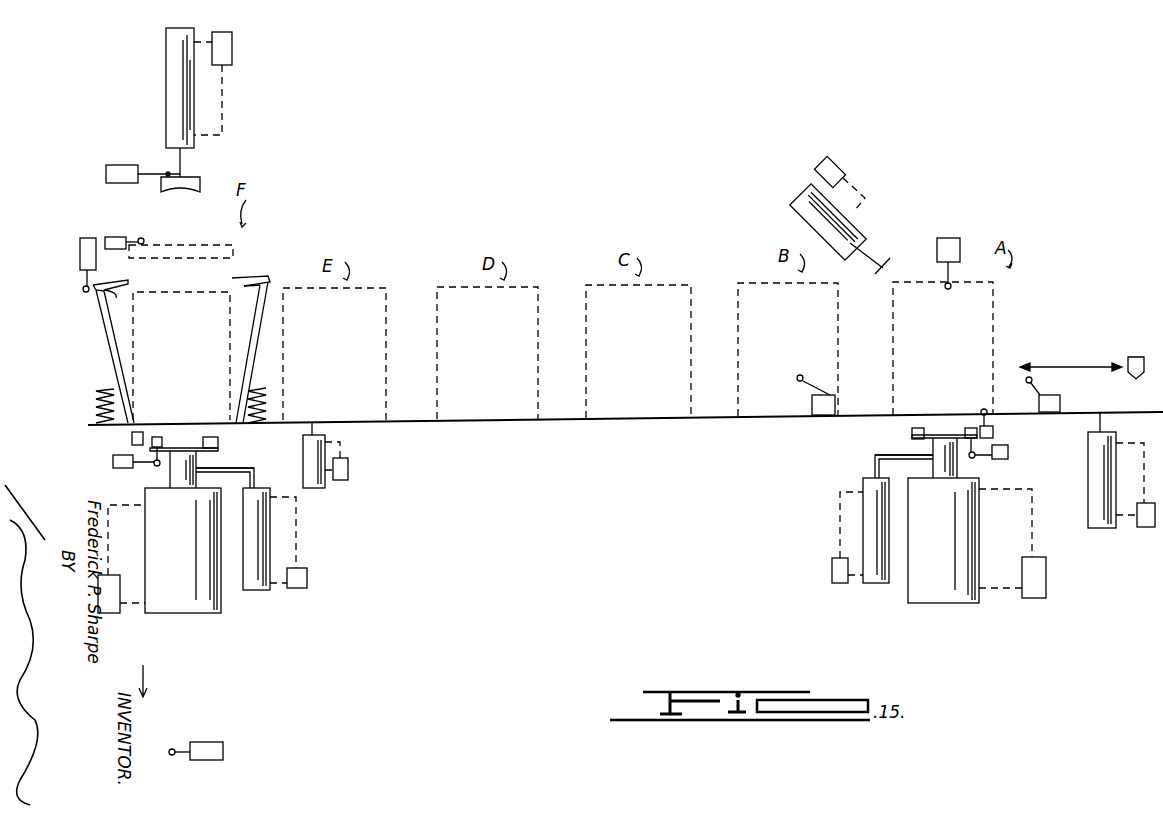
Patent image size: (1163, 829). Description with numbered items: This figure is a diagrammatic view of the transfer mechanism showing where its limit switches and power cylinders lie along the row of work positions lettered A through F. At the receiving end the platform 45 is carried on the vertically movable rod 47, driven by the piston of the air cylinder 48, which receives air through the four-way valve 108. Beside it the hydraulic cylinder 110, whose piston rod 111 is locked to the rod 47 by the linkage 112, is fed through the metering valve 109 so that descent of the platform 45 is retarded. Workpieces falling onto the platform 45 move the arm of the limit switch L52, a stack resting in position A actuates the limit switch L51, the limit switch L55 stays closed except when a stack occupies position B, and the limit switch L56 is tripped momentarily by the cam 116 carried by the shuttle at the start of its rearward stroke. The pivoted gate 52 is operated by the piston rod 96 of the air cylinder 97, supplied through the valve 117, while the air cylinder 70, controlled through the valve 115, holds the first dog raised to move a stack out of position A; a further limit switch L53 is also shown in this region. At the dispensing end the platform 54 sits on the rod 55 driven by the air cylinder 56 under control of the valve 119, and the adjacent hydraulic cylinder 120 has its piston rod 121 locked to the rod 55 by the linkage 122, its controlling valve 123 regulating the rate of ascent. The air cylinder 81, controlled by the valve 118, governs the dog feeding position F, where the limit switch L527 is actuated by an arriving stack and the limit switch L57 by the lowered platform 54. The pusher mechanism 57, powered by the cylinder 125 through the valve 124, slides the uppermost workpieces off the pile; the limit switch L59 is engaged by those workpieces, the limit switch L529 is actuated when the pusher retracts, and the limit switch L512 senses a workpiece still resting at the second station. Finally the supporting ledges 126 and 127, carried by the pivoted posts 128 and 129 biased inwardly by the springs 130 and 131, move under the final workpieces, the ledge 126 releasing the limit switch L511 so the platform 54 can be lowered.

The valve 124 is at (232, 48).
The cylinder 125 is at (166, 96).
The pusher mechanism 57 is at (195, 178).
The limit switch L529 is at (106, 173).
The limit switch L59 is at (115, 237).
The limit switch L511 is at (80, 248).
The supporting ledge 126 is at (116, 298).
The supporting ledge 127 is at (243, 282).
The post 128 is at (104, 340).
The post 129 is at (258, 344).
The spring 130 is at (96, 405).
The spring 131 is at (262, 410).
The platform 54 is at (212, 437).
The limit switch L527 is at (132, 440).
The limit switch L57 is at (113, 463).
The rod 55 is at (180, 478).
The air cylinder 56 is at (183, 550).
The piston rod 121 is at (252, 480).
The linkage 122 is at (220, 465).
The hydraulic cylinder 120 is at (258, 590).
The valve 119 is at (110, 613).
The controlling valve 123 is at (307, 578).
The air cylinder 81 is at (320, 483).
The valve 118 is at (348, 465).
The limit switch L512 is at (225, 722).
The air cylinder 97 is at (800, 208).
The valve 117 is at (838, 172).
The piston rod 96 is at (865, 252).
The gate 52 is at (880, 272).
The limit switch L52 is at (950, 240).
The cam 116 is at (1140, 357).
The limit switch L56 is at (1052, 400).
The limit switch L55 is at (818, 414).
The platform 45 is at (918, 428).
The rod 47 is at (935, 448).
The limit switch L51 is at (993, 431).
The limit switch L53 is at (1004, 459).
The air cylinder 48 is at (943, 540).
The linkage 112 is at (880, 455).
The piston rod 111 is at (875, 470).
The cylinder 110 is at (870, 583).
The metering valve 109 is at (832, 570).
The four-way valve 108 is at (1038, 598).
The air cylinder 70 is at (1094, 528).
The valve 115 is at (1145, 527).